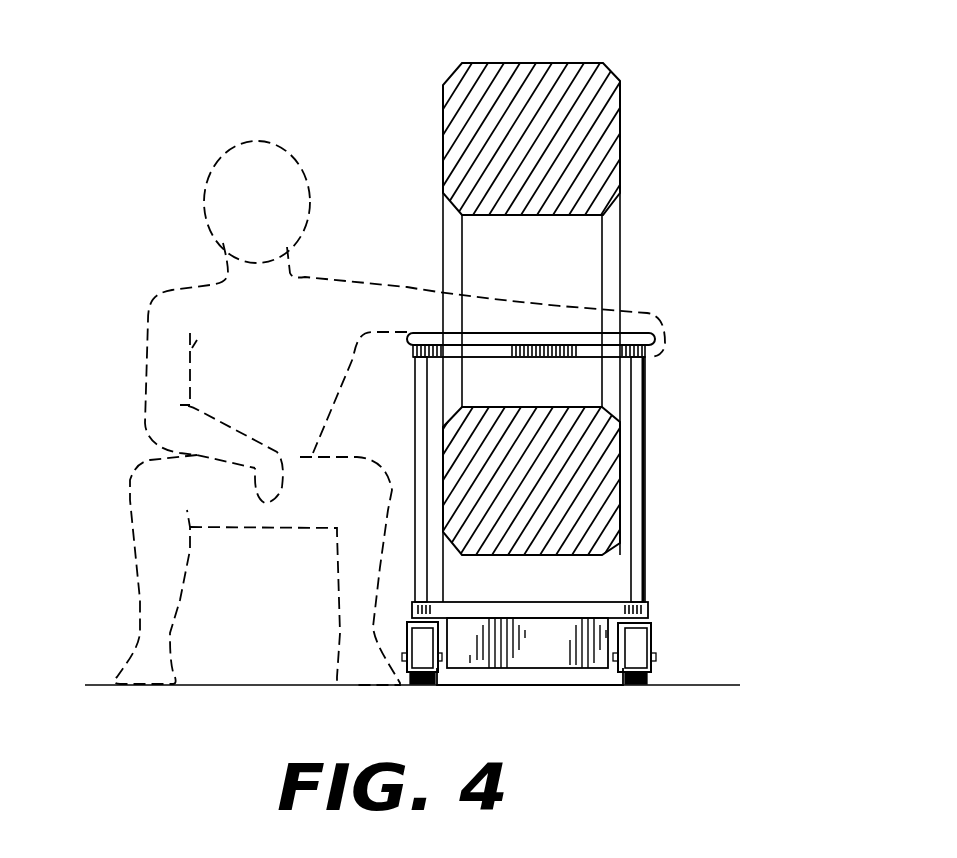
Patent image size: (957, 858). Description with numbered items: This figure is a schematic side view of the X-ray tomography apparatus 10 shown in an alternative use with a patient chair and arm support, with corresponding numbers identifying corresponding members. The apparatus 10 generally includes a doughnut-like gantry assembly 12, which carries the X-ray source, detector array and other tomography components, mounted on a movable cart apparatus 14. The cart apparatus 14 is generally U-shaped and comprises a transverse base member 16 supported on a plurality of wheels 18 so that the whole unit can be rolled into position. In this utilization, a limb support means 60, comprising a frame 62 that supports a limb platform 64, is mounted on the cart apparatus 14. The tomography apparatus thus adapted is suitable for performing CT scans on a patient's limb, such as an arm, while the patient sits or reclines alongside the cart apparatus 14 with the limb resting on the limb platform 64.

The X-ray tomography apparatus 10 is at (674, 88).
The gantry assembly 12 is at (621, 157).
The cart apparatus 14 is at (672, 457).
The base member 16 is at (538, 655).
The wheels 18 is at (637, 648).
The limb support means 60 is at (660, 379).
The frame 62 is at (646, 405).
The limb platform 64 is at (493, 360).